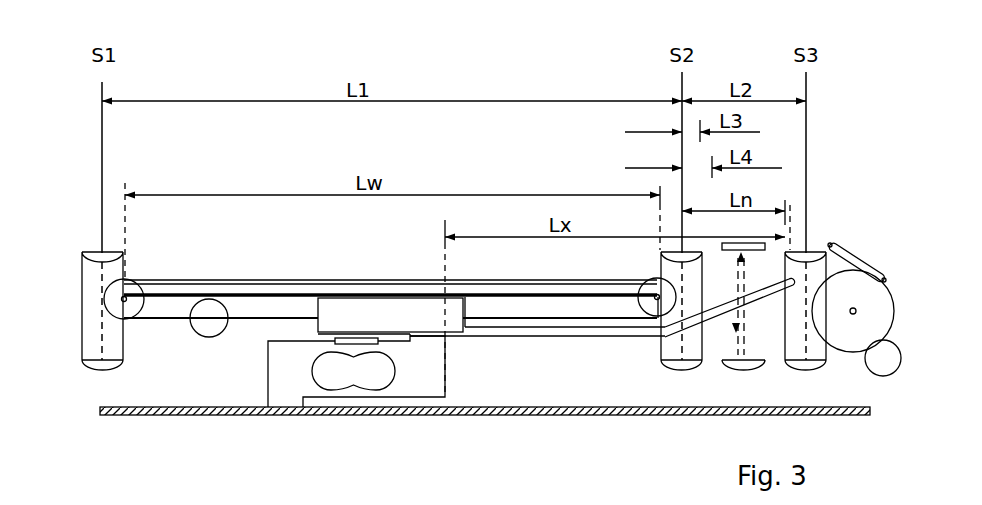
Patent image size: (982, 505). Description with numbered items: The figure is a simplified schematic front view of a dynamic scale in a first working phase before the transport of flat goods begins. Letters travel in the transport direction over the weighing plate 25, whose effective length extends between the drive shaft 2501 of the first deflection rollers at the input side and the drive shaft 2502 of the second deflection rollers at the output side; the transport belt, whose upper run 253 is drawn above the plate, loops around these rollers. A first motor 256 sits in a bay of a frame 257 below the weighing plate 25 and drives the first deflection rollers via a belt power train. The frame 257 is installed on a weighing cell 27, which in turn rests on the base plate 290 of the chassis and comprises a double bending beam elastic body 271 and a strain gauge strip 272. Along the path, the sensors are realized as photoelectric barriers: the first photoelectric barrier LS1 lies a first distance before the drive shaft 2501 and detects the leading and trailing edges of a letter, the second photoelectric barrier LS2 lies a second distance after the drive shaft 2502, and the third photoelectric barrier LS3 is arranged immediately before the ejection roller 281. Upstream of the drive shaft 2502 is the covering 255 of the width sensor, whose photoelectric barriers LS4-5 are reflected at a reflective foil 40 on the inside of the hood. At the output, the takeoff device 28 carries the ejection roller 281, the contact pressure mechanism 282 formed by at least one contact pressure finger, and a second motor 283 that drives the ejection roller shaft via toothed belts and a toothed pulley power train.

The weighing plate 25 is at (390, 280).
The belt upper run 253 is at (270, 280).
The frame 257 is at (368, 312).
The drive shaft of the first deflection rollers 2501 is at (105, 306).
The drive shaft of the second deflection rollers 2502 is at (650, 298).
The first motor 256 is at (223, 334).
The covering of the width sensor 255 is at (597, 338).
The weighing cell 27 is at (360, 370).
The double bending beam elastic body 271 is at (433, 383).
The strain gauge strip 272 is at (335, 337).
The pressing unit 28 is at (869, 257).
The ejection roller 281 is at (873, 312).
The contact pressure mechanism 282 is at (855, 256).
The second motor 283 is at (893, 355).
The reflective foil 40 is at (722, 246).
The base plate 290 is at (105, 407).
The first photoelectric barrier LS1 is at (102, 282).
The second photoelectric barrier LS2 is at (681, 343).
The third photoelectric barrier LS3 is at (805, 342).
The photoelectric barriers of the width sensor LS4-5 is at (741, 340).